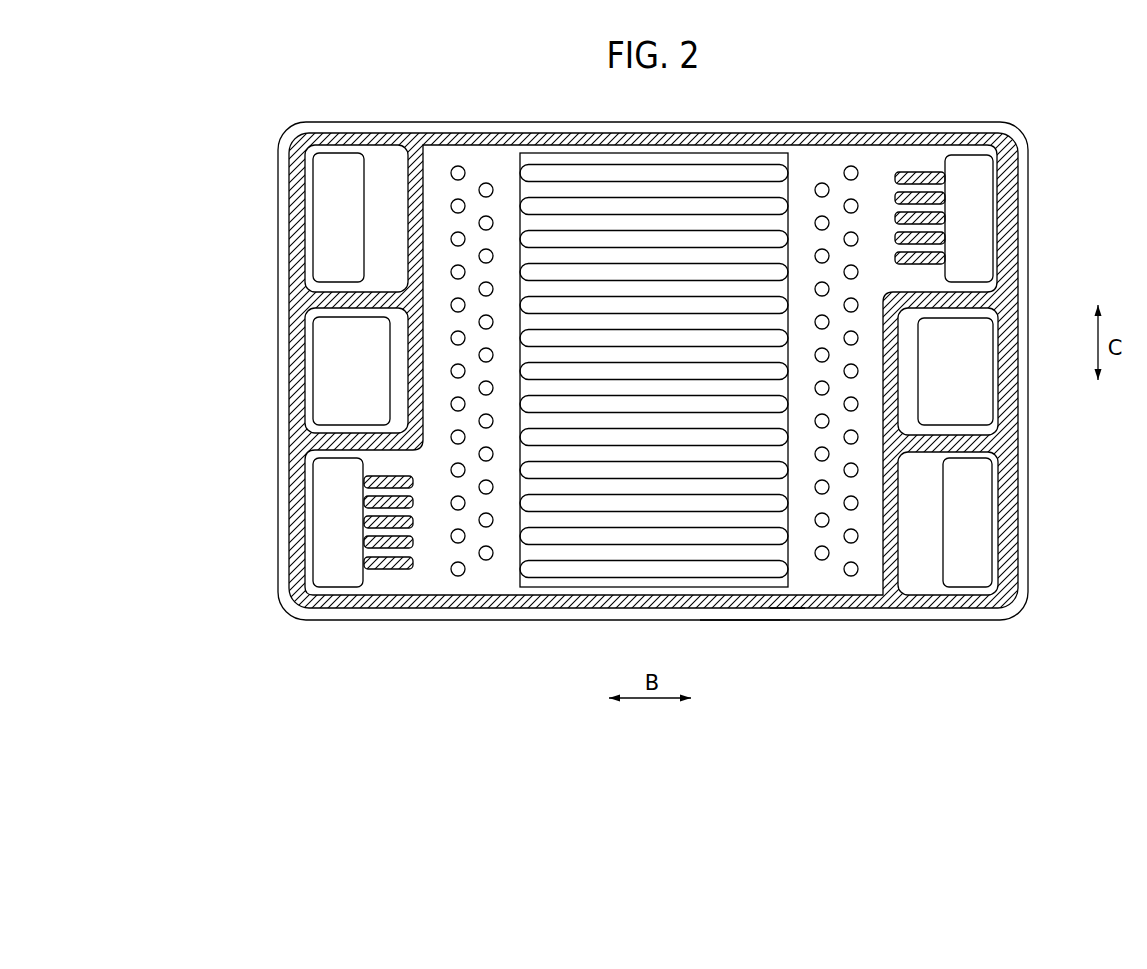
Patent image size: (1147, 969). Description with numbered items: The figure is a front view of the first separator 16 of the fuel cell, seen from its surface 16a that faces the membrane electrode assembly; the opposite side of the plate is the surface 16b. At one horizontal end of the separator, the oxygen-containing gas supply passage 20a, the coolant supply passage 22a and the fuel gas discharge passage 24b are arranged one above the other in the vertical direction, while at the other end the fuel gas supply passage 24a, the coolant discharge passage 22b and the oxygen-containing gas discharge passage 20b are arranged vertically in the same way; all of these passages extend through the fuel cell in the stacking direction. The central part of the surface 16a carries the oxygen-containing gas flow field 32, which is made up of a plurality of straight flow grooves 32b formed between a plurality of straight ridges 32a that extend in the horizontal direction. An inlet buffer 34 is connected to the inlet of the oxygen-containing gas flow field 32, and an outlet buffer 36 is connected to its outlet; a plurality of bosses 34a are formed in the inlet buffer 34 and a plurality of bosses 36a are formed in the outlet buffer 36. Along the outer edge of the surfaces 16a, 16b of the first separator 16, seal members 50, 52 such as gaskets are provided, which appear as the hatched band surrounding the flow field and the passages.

The first separator 16 is at (785, 77).
The surface of first separator 16a is at (746, 598).
The surface of first separator 16b is at (788, 590).
The oxygen-containing gas supply passage 20a is at (944, 218).
The oxygen-containing gas discharge passage 20b is at (363, 522).
The coolant supply passage 22a is at (1048, 414).
The coolant discharge passage 22b is at (268, 398).
The fuel gas supply passage 24a is at (356, 218).
The fuel gas discharge passage 24b is at (948, 523).
The oxygen-containing gas flow field 32 is at (695, 205).
The straight ridges 32a is at (562, 210).
The straight flow grooves 32b is at (625, 222).
The inlet buffer 34 is at (866, 190).
The bosses 34a is at (824, 561).
The outlet buffer 36 is at (442, 548).
The bosses 36a is at (486, 182).
The seal member 50 is at (958, 141).
The seal member 52 is at (833, 135).